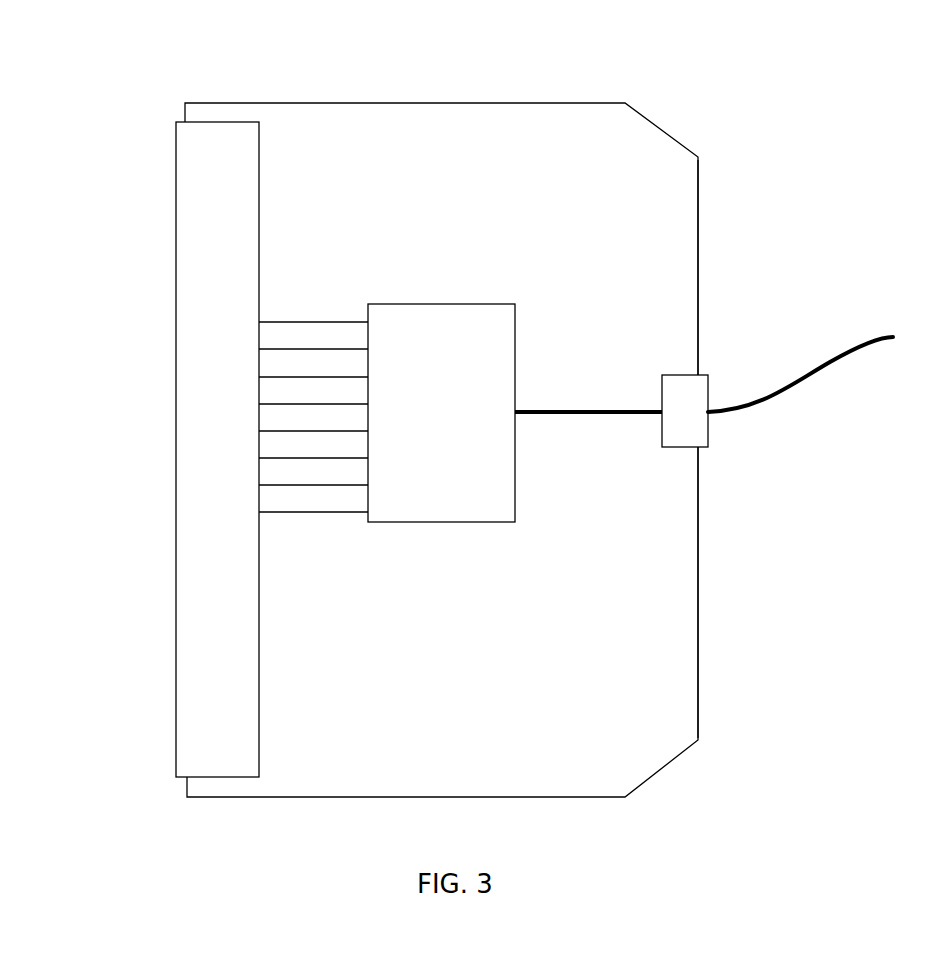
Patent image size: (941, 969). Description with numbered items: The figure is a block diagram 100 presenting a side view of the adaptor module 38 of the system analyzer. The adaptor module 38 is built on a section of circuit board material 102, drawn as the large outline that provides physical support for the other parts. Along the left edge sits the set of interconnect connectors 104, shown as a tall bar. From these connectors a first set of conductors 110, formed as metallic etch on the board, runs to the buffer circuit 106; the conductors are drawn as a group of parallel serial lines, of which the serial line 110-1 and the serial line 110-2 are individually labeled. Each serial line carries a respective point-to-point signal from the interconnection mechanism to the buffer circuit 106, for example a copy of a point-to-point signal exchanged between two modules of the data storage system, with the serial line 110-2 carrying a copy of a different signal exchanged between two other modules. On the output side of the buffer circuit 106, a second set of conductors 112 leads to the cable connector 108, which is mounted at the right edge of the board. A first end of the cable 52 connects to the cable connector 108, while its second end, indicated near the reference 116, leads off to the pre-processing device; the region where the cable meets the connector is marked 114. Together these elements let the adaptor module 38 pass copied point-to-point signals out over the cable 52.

The block diagram 100 is at (784, 108).
The section of circuit board material 102 is at (459, 647).
The adaptor module 38 is at (699, 193).
The set of interconnect connectors 104 is at (178, 240).
The first set of conductors 110 is at (345, 341).
The serial line 110-1 is at (314, 321).
The serial line 110-2 is at (327, 347).
The buffer circuit 106 is at (459, 434).
The second set of conductors 112 is at (588, 415).
The cable connector 108 is at (708, 447).
The connector port 114 is at (726, 383).
The cable 52 is at (817, 362).
The cable end 116 is at (897, 314).